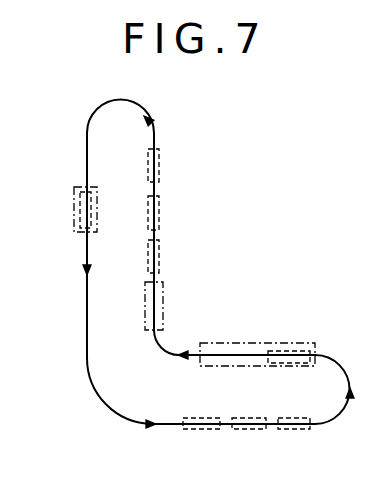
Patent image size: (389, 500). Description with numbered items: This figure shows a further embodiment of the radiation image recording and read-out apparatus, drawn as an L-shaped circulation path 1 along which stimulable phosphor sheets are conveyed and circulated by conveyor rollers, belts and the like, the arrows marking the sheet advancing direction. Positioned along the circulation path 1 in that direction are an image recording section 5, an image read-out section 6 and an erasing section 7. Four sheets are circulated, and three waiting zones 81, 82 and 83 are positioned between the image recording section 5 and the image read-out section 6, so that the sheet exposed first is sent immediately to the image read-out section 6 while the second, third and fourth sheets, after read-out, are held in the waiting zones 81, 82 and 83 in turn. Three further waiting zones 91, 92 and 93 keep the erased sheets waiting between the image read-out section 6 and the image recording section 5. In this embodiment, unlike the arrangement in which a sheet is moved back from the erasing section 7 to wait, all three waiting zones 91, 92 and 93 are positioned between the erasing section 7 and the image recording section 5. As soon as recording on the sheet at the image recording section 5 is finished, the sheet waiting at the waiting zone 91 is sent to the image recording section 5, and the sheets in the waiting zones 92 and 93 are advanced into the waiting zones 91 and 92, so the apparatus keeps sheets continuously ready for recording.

The circulation path 1 is at (88, 133).
The image recording section 5 is at (73, 211).
The image read-out section 6 is at (273, 340).
The erasing section 7 is at (167, 311).
The waiting zone 91 is at (160, 172).
The waiting zone 92 is at (160, 216).
The waiting zone 93 is at (160, 262).
The waiting zone 81 is at (298, 433).
The waiting zone 82 is at (256, 433).
The waiting zone 83 is at (206, 433).